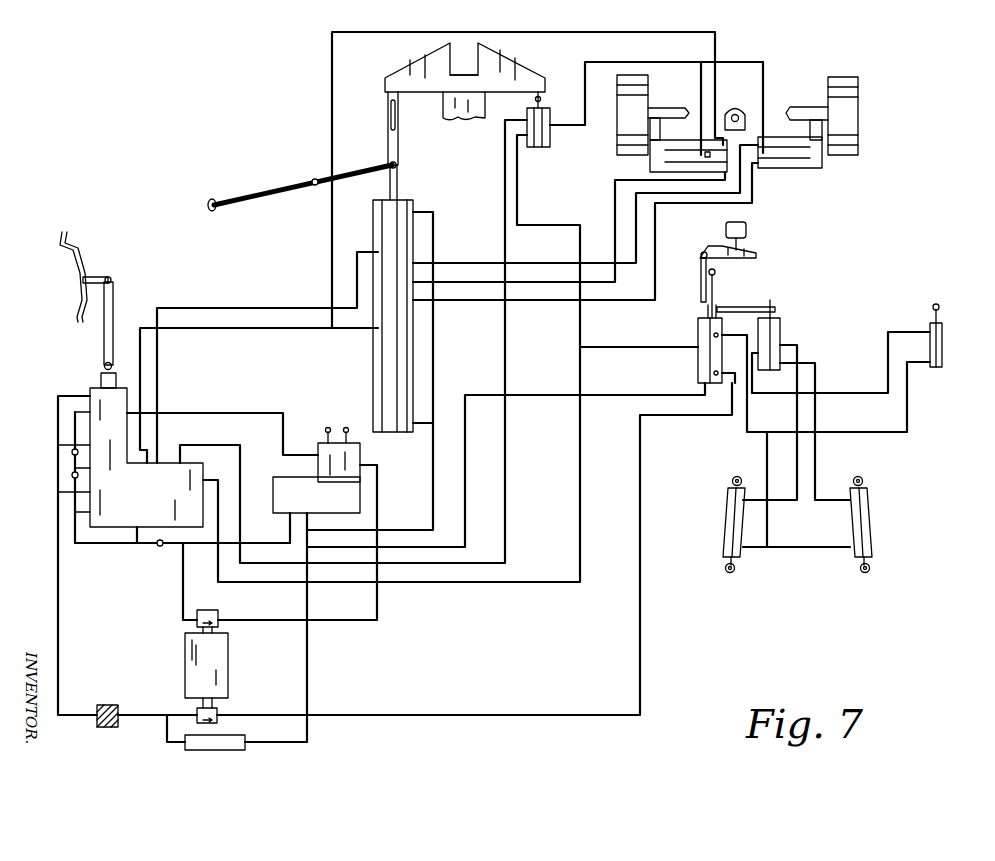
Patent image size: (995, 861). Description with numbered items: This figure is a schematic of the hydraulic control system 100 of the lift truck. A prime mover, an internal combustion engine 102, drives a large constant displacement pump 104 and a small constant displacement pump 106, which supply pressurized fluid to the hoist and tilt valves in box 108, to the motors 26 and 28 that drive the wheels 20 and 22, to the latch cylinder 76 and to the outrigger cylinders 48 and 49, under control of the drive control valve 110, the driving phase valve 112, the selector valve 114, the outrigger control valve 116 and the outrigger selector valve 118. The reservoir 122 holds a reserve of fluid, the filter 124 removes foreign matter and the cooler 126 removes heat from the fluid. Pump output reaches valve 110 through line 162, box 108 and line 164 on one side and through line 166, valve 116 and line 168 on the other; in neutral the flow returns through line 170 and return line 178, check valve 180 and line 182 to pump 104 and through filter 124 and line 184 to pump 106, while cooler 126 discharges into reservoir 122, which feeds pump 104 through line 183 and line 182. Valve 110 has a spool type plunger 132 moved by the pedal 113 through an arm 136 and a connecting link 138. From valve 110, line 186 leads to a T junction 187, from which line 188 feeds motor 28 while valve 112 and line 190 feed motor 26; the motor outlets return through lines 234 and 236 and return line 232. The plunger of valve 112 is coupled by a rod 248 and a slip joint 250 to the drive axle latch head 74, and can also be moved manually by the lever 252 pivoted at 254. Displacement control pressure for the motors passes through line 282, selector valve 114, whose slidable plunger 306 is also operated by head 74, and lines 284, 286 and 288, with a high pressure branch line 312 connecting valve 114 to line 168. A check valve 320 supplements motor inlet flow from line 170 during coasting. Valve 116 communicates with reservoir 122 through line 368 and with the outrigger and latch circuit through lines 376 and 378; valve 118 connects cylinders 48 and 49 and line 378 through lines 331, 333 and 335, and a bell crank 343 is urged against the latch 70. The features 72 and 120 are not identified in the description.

The wheel 20 is at (862, 112).
The wheel 22 is at (613, 130).
The motor 26 is at (800, 170).
The motor 28 is at (660, 162).
The outrigger cylinder 48 is at (870, 524).
The outrigger cylinder 49 is at (724, 530).
The latch 70 is at (746, 240).
The notch 72 is at (464, 54).
The drive axle latch head 74 is at (410, 70).
The latch cylinder 76 is at (944, 346).
The hydraulic control system 100 is at (653, 582).
The internal combustion engine 102 is at (232, 661).
The large constant displacement pump 104 is at (222, 612).
The small constant displacement pump 106 is at (220, 710).
The valve box 108 is at (362, 458).
The drive control valve 110 is at (88, 500).
The driving phase valve 112 is at (368, 356).
The pedal 113 is at (62, 258).
The selector valve 114 is at (540, 147).
The outrigger control valve 116 is at (698, 354).
The outrigger selector valve 118 is at (783, 330).
The valve stem 120 is at (720, 284).
The oil reservoir 122 is at (362, 495).
The filter 124 is at (110, 705).
The cooler 126 is at (208, 752).
The spool type plunger 132 is at (99, 382).
The arm 136 is at (98, 276).
The connecting link 138 is at (115, 302).
The line 162 is at (346, 624).
The line 164 is at (222, 413).
The line 166 is at (655, 435).
The high pressure line 168 is at (640, 346).
The line 170 is at (56, 432).
The return line 178 is at (98, 546).
The check valve 180 is at (159, 547).
The line 182 is at (180, 592).
The line 183 is at (272, 541).
The line 184 is at (140, 728).
The line 186 is at (188, 331).
The T junction 187 is at (328, 331).
The line 188 is at (590, 30).
The line 190 is at (462, 303).
The return line 232 is at (265, 306).
The line 234 is at (466, 260).
The line 236 is at (458, 280).
The rod 248 is at (401, 150).
The slip joint 250 is at (387, 118).
The lever 252 is at (268, 178).
The pivot 254 is at (313, 186).
The line 282 is at (509, 345).
The line 284 is at (632, 58).
The line 286 is at (697, 82).
The line 288 is at (788, 62).
The slidable plunger 306 is at (545, 99).
The high pressure branch line 312 is at (521, 197).
The check valve 320 is at (70, 477).
The line 331 is at (818, 366).
The line 333 is at (802, 345).
The line 335 is at (824, 396).
The bell crank 343 is at (700, 258).
The line 368 is at (637, 394).
The line 376 is at (736, 332).
The line 378 is at (714, 393).